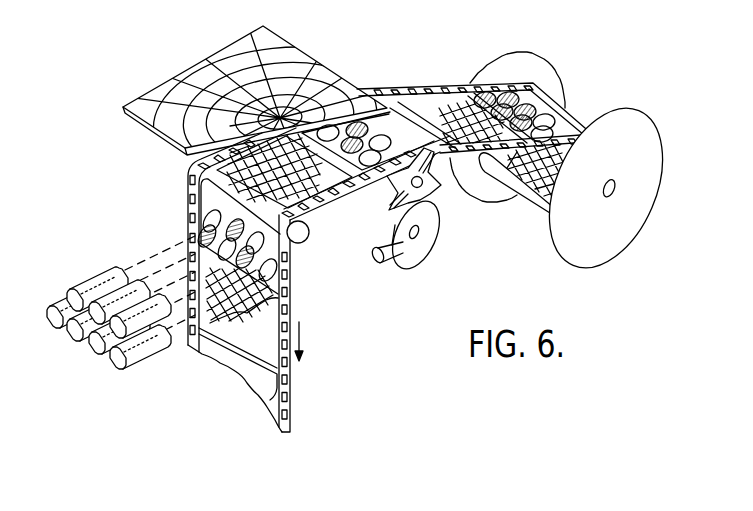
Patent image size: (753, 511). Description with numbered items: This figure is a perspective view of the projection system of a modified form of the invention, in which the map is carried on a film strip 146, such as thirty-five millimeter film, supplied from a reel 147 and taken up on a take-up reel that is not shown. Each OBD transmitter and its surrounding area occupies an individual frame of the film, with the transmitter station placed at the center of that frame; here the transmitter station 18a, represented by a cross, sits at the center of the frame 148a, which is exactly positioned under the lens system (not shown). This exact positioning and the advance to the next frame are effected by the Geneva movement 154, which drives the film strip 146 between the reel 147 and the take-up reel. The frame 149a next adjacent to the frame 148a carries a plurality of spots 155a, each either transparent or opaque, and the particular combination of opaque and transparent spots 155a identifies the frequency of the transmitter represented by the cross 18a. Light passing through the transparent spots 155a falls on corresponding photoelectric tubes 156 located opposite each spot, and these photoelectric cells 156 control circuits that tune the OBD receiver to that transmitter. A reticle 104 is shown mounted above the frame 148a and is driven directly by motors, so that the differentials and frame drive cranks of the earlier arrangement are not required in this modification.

The reticle 104 is at (317, 39).
The film strip 146 is at (431, 83).
The reel 147 is at (562, 60).
The Geneva movement 154 is at (449, 214).
The frame 148a is at (321, 150).
The transmitter station 18a is at (298, 170).
The frame 149a is at (286, 272).
The spots 155a is at (236, 219).
The photoelectric tubes 156 is at (116, 357).